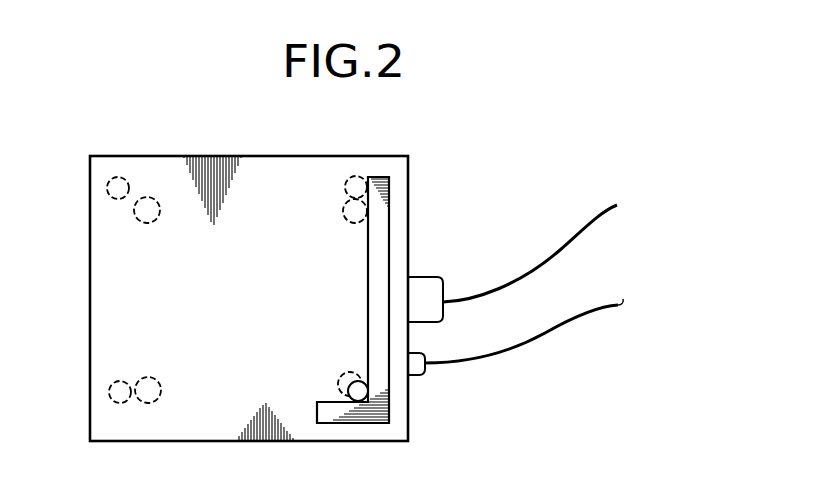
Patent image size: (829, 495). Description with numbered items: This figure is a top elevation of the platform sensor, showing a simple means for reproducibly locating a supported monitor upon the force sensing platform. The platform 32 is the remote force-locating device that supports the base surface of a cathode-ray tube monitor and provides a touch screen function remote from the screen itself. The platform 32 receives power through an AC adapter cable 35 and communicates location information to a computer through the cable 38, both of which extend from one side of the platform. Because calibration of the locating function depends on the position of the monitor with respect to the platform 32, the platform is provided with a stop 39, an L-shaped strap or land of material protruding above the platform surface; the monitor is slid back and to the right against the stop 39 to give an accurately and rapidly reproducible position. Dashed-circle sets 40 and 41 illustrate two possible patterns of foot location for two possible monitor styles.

The platform embodiment of the remote force-locating device 32 is at (126, 296).
The AC adapter cable 35 is at (550, 327).
The cable 38 is at (580, 232).
The stop 39 is at (347, 424).
The dashed-circle set 40 is at (151, 223).
The dashed-circle set 41 is at (116, 176).